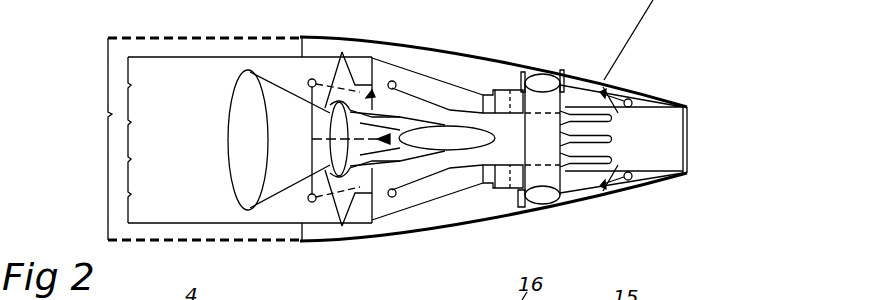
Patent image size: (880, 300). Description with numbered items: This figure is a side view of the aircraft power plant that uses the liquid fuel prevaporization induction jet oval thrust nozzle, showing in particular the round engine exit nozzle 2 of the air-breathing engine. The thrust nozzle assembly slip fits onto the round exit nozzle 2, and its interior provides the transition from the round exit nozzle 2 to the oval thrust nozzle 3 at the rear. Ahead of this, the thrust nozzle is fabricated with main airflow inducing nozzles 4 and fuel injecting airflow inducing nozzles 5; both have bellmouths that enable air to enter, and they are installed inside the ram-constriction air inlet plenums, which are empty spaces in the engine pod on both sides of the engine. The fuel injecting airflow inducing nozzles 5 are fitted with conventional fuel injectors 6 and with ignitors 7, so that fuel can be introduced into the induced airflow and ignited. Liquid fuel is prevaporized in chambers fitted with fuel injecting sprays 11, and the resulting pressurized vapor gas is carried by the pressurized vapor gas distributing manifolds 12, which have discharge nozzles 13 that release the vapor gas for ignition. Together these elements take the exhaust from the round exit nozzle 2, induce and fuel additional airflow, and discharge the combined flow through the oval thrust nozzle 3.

The round engine exit nozzle 2 is at (483, 93).
The oval thrust nozzle 3 is at (688, 128).
The main airflow inducing nozzles 4 is at (268, 83).
The fuel injecting airflow inducing nozzles 5 is at (327, 105).
The fuel injectors 6 is at (373, 92).
The ignitors 7 is at (394, 82).
The fuel injecting sprays 11 is at (620, 85).
The pressurized vapor gas distributing manifolds 12 is at (543, 78).
The discharge nozzles 13 is at (565, 115).